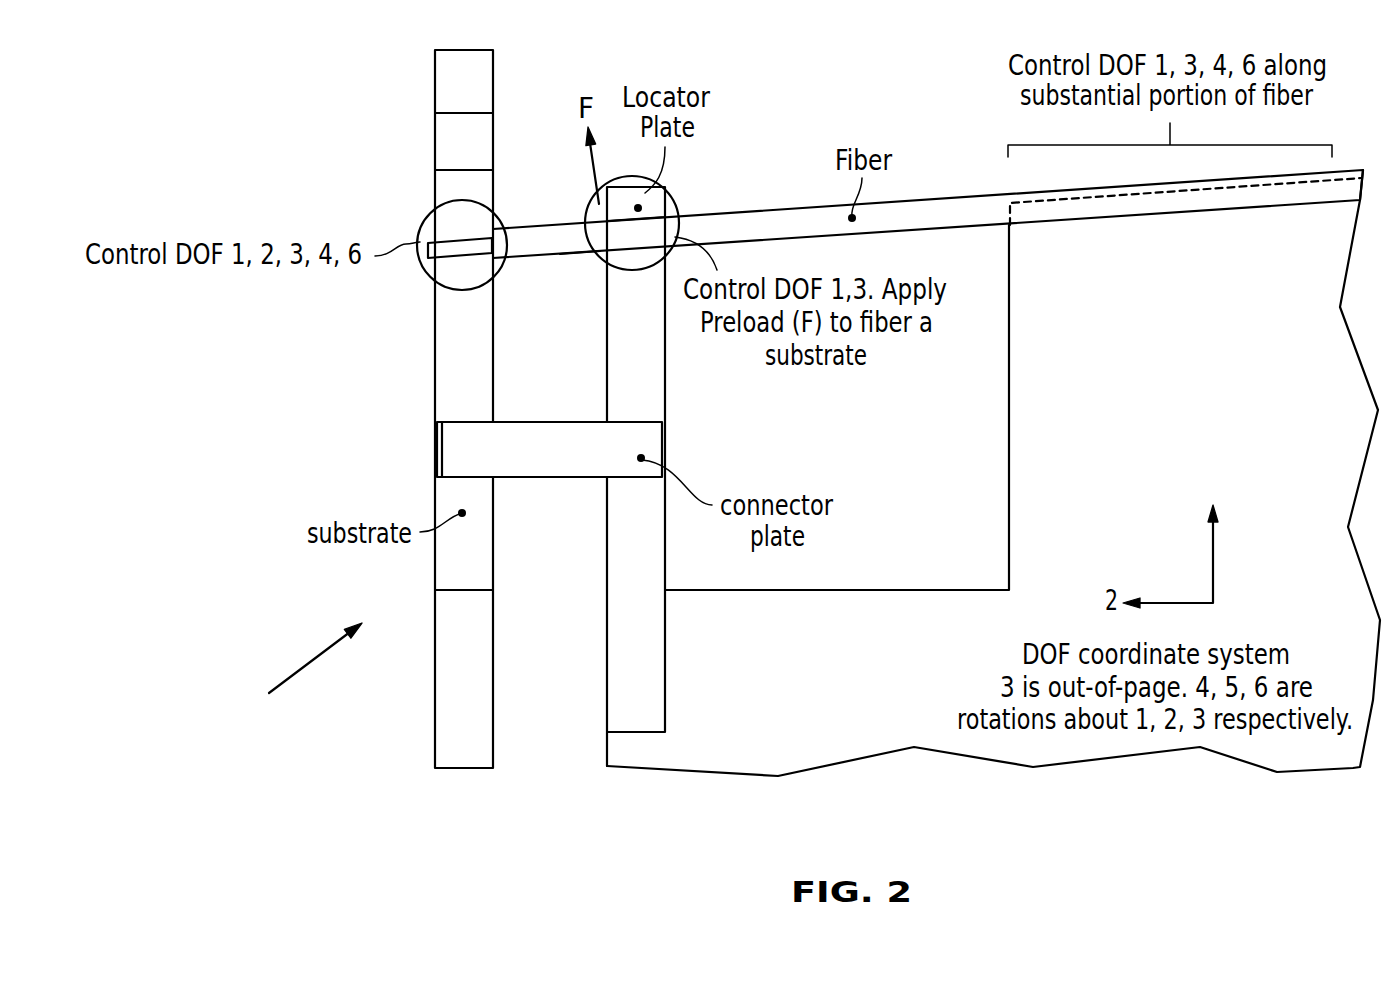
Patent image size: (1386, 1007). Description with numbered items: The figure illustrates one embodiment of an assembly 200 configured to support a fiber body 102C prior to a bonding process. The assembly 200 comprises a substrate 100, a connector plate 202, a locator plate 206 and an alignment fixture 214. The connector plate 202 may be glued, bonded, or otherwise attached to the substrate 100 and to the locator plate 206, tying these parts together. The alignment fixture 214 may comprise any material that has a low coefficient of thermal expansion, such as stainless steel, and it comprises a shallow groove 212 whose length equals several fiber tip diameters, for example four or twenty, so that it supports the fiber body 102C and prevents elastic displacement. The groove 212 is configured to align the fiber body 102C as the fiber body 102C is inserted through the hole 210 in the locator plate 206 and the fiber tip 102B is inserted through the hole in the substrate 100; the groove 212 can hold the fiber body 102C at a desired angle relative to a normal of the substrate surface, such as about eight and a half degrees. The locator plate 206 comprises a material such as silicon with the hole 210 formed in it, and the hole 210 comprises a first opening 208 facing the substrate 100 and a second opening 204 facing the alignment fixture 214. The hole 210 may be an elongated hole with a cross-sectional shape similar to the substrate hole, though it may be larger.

The substrate 100 is at (452, 360).
The fiber tip 102B is at (443, 243).
The fiber body 102C is at (748, 233).
The assembly 200 is at (294, 681).
The connector plate 202 is at (648, 433).
The second opening 204 is at (675, 210).
The locator plate 206 is at (650, 393).
The first opening 208 is at (597, 254).
The hole 210 is at (598, 207).
The groove 212 is at (1132, 217).
The alignment fixture 214 is at (1205, 476).